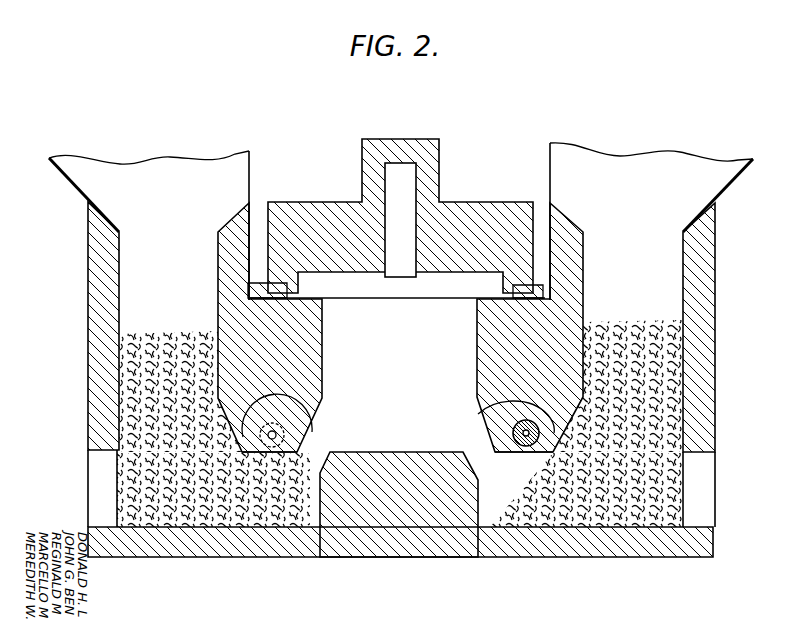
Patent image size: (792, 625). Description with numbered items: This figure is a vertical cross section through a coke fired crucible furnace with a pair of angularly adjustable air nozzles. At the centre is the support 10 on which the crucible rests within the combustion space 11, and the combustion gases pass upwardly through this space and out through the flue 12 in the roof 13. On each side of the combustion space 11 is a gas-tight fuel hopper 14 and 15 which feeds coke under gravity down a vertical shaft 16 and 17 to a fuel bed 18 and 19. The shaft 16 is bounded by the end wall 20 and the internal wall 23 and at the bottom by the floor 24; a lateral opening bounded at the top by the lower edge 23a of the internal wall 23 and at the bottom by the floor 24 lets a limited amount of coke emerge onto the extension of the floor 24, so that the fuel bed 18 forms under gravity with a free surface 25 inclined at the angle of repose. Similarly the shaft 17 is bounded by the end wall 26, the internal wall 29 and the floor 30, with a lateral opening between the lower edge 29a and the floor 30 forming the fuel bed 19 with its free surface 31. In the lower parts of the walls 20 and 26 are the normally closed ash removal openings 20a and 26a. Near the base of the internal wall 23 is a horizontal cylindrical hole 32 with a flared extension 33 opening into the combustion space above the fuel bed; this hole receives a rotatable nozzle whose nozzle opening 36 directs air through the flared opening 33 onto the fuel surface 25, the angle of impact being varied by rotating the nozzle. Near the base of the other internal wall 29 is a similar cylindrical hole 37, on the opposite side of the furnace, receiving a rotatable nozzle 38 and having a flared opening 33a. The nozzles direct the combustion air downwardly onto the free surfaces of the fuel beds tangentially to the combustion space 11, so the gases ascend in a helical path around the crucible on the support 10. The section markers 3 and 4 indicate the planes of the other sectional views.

The section line 3- 3 is at (401, 140).
The section line 4- 4 is at (78, 432).
The central support 10 is at (378, 480).
The combustion space 11 is at (394, 343).
The flue 12 is at (405, 197).
The roof 13 is at (320, 227).
The fuel hopper 14 is at (130, 184).
The fuel hopper 15 is at (640, 190).
The vertical shaft 16 is at (180, 367).
The vertical shaft 17 is at (618, 362).
The fuel bed 18 is at (207, 490).
The fuel bed 19 is at (570, 513).
The end wall 20 is at (97, 336).
The opening 20a is at (95, 500).
The internal wall 23 is at (272, 366).
The lower edge 23a is at (283, 393).
The floor 24 is at (252, 545).
The free surface 25 is at (260, 476).
The end wall 26 is at (697, 348).
The opening 26a is at (708, 492).
The internal wall 29 is at (498, 353).
The lower edge 29a is at (497, 408).
The floor 30 is at (630, 545).
The free surface 31 is at (501, 477).
The horizontal cylindrical hole 32 is at (290, 418).
The flared extension 33 is at (258, 452).
The flared opening 33a is at (545, 448).
The nozzle opening 36 is at (300, 433).
The cylindrical hole 37 is at (513, 430).
The rotatable nozzle 38 is at (515, 438).